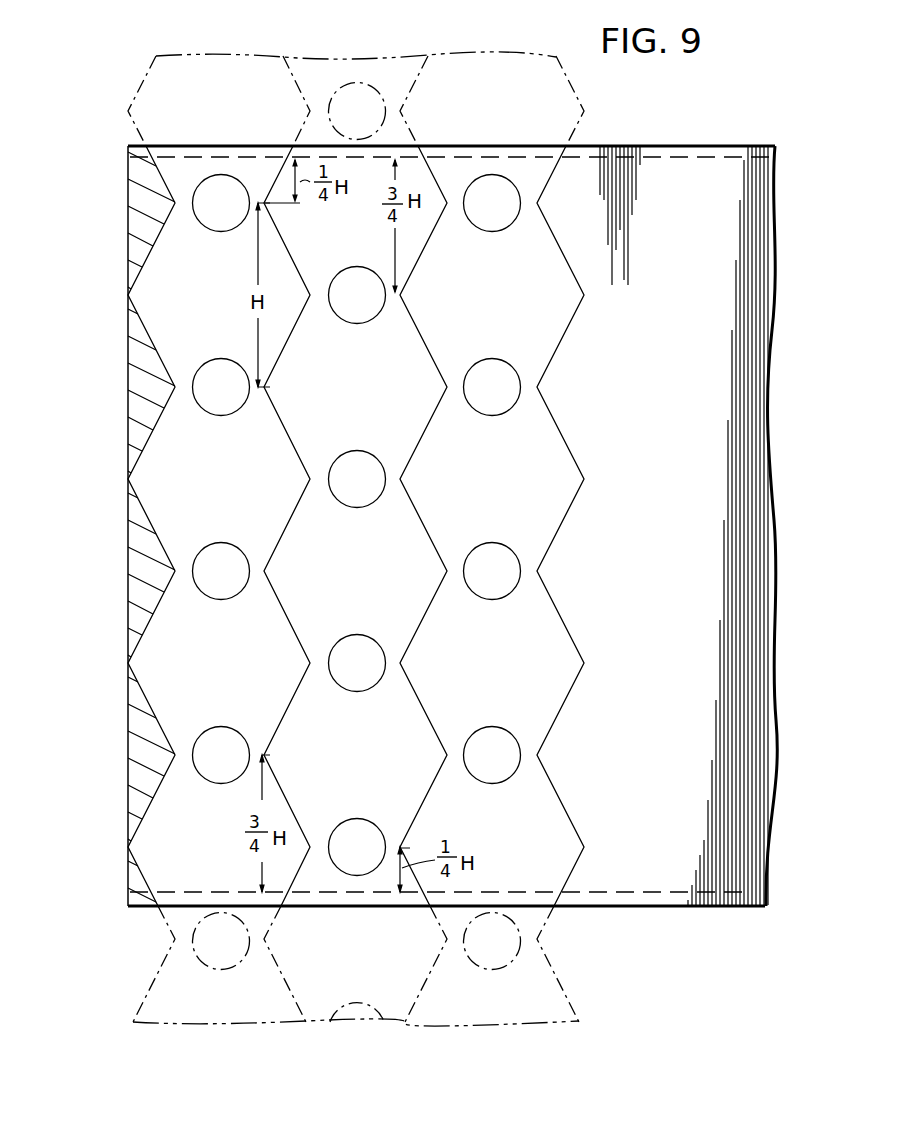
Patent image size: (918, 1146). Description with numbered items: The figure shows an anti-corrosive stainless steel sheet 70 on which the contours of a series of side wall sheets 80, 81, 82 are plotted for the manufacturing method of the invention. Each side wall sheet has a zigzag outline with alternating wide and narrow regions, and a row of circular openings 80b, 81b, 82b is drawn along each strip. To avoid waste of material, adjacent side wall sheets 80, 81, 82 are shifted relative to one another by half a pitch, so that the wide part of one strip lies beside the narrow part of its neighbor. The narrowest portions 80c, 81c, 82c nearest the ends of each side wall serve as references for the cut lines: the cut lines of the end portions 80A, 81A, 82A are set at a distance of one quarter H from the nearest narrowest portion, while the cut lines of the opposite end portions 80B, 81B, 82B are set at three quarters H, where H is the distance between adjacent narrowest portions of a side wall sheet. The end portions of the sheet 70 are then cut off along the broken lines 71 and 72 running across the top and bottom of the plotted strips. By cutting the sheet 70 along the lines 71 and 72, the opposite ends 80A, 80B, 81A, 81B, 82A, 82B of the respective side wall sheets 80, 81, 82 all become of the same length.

The anti-corrosive stainless steel sheet 70 is at (752, 481).
The broken line 71 is at (709, 160).
The broken line 72 is at (676, 892).
The side wall sheet 80 is at (236, 493).
The end portion of side wall sheet 80A is at (188, 158).
The end portion of side wall sheet 80B is at (181, 892).
The hole of first strip 80b is at (222, 599).
The narrowest portion 80c is at (176, 206).
The side wall sheet 81 is at (373, 583).
The end portion of side wall sheet 81A is at (333, 895).
The end portion of side wall sheet 81B is at (357, 168).
The hole of second strip 81b is at (358, 648).
The narrowest portion 81c is at (400, 298).
The side wall sheet 82 is at (509, 493).
The end portion of side wall sheet 82A is at (497, 158).
The end portion of side wall sheet 82B is at (521, 892).
The hole of third strip 82b is at (497, 374).
The narrowest portion 82c is at (536, 206).